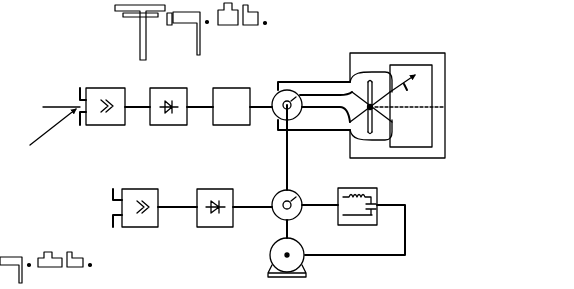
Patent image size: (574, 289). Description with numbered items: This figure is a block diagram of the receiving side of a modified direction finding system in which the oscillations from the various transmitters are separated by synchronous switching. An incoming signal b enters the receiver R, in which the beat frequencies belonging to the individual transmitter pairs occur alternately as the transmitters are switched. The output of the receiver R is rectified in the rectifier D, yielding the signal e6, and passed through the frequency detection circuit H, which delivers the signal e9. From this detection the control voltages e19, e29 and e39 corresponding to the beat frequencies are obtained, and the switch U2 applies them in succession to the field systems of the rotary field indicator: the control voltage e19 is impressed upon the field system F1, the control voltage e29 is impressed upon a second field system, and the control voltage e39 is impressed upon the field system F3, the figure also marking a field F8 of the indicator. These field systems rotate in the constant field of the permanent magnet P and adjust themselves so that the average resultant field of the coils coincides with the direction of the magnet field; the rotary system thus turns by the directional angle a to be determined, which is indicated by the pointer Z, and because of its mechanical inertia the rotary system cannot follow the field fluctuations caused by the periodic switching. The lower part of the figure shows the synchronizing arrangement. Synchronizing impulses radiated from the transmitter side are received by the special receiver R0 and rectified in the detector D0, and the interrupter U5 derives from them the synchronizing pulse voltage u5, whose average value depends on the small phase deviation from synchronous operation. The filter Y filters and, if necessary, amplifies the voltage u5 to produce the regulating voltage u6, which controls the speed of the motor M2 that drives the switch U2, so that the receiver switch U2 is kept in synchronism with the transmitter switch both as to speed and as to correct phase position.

The input signal b is at (53, 127).
The receiver R is at (98, 88).
The rectifier D is at (167, 88).
The frequency detection circuit H is at (245, 78).
The switch U2 is at (279, 94).
The signal e6 is at (203, 113).
The signal e9 is at (266, 113).
The control voltage e39 is at (304, 75).
The control voltage e19 is at (322, 102).
The control voltage e29 is at (324, 136).
The fluid F8 is at (342, 82).
The permanent magnet P is at (423, 160).
The field system F1 is at (392, 112).
The field system F3 is at (388, 124).
The pointer Z is at (411, 76).
The directional angle a is at (410, 92).
The special receiver R0 is at (140, 189).
The detector D0 is at (212, 189).
The interrupter U5 is at (275, 193).
The filter Y is at (360, 188).
The synchronizing pulse voltage u5 is at (328, 212).
The regulating voltage u6 is at (358, 248).
The motor M2 is at (303, 262).